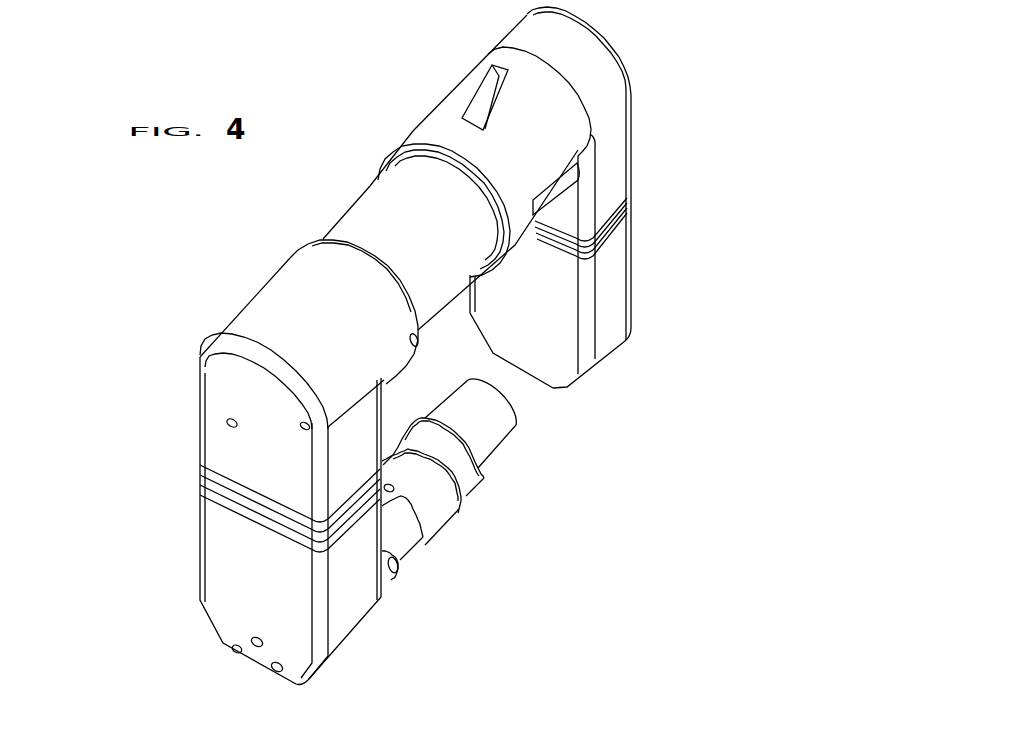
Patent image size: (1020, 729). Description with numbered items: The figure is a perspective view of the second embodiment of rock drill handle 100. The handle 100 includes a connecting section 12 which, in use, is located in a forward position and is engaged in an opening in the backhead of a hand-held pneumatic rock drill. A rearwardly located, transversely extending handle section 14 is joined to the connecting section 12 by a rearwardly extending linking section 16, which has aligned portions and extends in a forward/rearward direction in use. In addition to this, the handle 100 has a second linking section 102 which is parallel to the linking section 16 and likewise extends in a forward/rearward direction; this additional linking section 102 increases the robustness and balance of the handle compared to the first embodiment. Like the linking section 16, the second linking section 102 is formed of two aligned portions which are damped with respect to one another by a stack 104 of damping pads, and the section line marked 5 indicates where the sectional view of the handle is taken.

The connecting section 12 is at (452, 528).
The handle section 14 is at (398, 121).
The linking section 16 is at (190, 521).
The handle 100 is at (190, 422).
The second linking section 102 is at (641, 264).
The stack of damping pads 104 is at (640, 205).
The section line for FIG. 5 is at (643, 140).